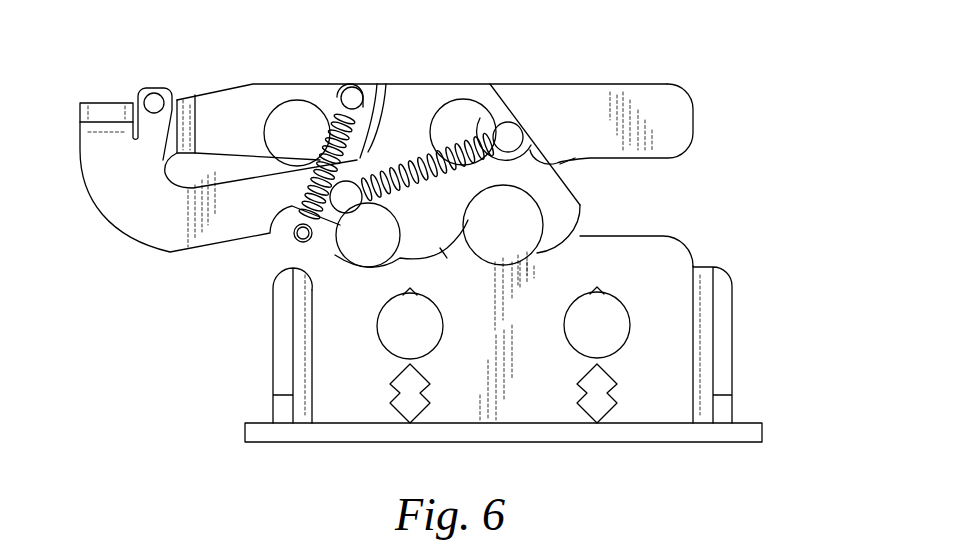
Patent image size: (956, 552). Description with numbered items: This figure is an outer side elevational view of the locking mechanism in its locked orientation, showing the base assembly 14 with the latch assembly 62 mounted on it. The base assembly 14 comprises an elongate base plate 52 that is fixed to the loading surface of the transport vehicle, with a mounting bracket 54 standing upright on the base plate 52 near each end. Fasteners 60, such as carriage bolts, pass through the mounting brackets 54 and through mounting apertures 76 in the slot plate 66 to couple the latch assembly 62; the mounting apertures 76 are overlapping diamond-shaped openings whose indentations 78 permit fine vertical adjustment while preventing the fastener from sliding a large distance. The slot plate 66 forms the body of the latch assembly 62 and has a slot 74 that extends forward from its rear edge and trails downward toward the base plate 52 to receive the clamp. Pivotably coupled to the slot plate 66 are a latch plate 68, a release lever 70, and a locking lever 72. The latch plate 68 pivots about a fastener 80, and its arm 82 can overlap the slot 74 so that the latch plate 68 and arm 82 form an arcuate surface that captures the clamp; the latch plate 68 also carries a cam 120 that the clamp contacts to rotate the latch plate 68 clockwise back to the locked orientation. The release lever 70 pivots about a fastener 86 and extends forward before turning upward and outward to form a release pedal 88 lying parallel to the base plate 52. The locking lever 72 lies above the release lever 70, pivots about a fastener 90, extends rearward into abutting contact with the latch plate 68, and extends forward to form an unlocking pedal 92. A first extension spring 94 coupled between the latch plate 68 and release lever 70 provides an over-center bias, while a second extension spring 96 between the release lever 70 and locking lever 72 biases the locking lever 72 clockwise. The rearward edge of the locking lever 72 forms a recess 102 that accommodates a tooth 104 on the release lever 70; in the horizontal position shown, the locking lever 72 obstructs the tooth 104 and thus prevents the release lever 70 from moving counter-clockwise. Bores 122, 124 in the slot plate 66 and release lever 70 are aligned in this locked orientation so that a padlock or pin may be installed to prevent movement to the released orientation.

The base assembly 14 is at (790, 218).
The base plate 52 is at (757, 424).
The mounting bracket 54 is at (735, 338).
The fastener 60 is at (620, 305).
The latch assembly 62 is at (75, 94).
The slot plate 66 is at (668, 83).
The latch plate 68 is at (440, 83).
The release lever 70 is at (162, 242).
The locking lever 72 is at (254, 83).
The slot 74 is at (660, 244).
The mounting aperture 76 is at (612, 378).
The indentation 78 is at (597, 424).
The fastener 80 is at (490, 83).
The arm 82 is at (582, 207).
The fastener 86 is at (350, 263).
The release pedal 88 is at (108, 103).
The fastener 90 is at (303, 108).
The unlocking pedal 92 is at (218, 97).
The first extension spring 94 is at (556, 162).
The second extension spring 96 is at (268, 233).
The recess 102 is at (384, 95).
The tooth 104 is at (365, 141).
The cam 120 is at (447, 258).
The bore 122 is at (152, 88).
The bore 124 is at (154, 103).